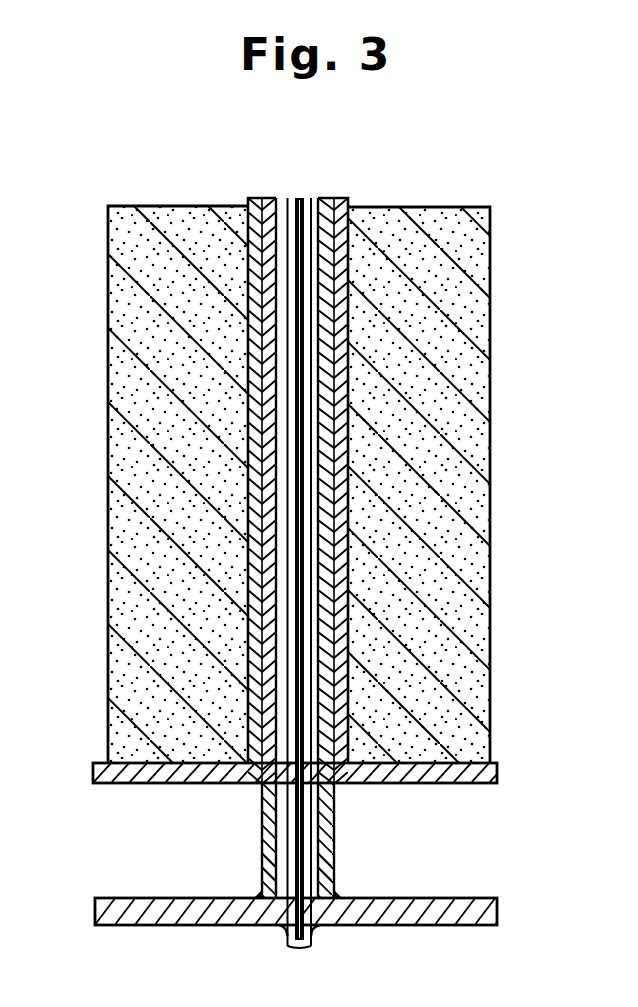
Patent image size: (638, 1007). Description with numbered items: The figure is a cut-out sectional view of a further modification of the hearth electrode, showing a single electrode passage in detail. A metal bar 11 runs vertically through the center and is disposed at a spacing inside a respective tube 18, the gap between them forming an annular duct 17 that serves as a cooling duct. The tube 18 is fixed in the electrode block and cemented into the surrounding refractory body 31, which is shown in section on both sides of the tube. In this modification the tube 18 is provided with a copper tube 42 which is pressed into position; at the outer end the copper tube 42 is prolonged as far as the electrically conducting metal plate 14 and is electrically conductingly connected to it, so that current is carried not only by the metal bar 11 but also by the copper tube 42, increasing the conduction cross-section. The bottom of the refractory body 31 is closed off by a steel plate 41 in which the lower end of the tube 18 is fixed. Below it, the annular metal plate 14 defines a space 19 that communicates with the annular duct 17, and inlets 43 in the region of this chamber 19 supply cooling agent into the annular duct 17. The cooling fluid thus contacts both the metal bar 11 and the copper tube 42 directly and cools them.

The refractory body 31 is at (162, 248).
The tube 18 is at (348, 243).
The annular duct 17 is at (287, 198).
The copper tube 42 is at (330, 198).
The metal bar 11 is at (299, 198).
The steel plate 41 is at (134, 784).
The metal plate 14 is at (138, 908).
The space 19 is at (208, 865).
The inlet 43 is at (336, 870).